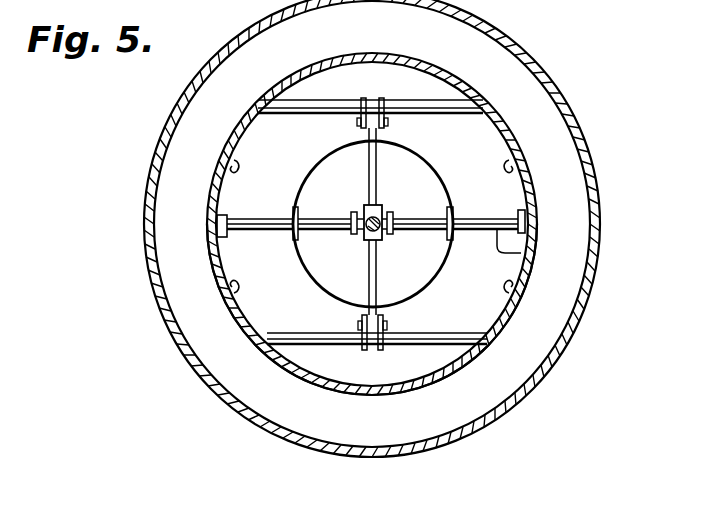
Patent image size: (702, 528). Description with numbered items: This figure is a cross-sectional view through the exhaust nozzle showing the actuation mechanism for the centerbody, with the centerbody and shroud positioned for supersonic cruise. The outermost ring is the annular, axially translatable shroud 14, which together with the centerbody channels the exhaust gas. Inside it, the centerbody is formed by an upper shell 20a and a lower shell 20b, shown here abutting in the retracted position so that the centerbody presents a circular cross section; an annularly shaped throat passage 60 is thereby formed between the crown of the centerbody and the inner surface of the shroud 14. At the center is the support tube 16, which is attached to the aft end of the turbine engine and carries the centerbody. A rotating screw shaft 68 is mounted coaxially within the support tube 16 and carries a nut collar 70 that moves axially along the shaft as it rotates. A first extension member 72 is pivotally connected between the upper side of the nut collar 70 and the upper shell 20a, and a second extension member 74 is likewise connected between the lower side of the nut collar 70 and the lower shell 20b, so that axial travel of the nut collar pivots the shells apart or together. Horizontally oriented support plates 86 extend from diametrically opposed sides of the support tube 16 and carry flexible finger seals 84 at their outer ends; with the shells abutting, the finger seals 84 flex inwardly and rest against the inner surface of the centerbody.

The shroud 14 is at (496, 27).
The upper shell 20a is at (478, 97).
The lower shell 20b is at (450, 378).
The throat passage 60 is at (385, 37).
The support tube 16 is at (448, 196).
The screw shaft 68 is at (365, 215).
The nut collar 70 is at (367, 240).
The first extension member 72 is at (378, 170).
The second extension member 74 is at (378, 275).
The finger seals 84 is at (237, 291).
The support plates 86 is at (523, 253).